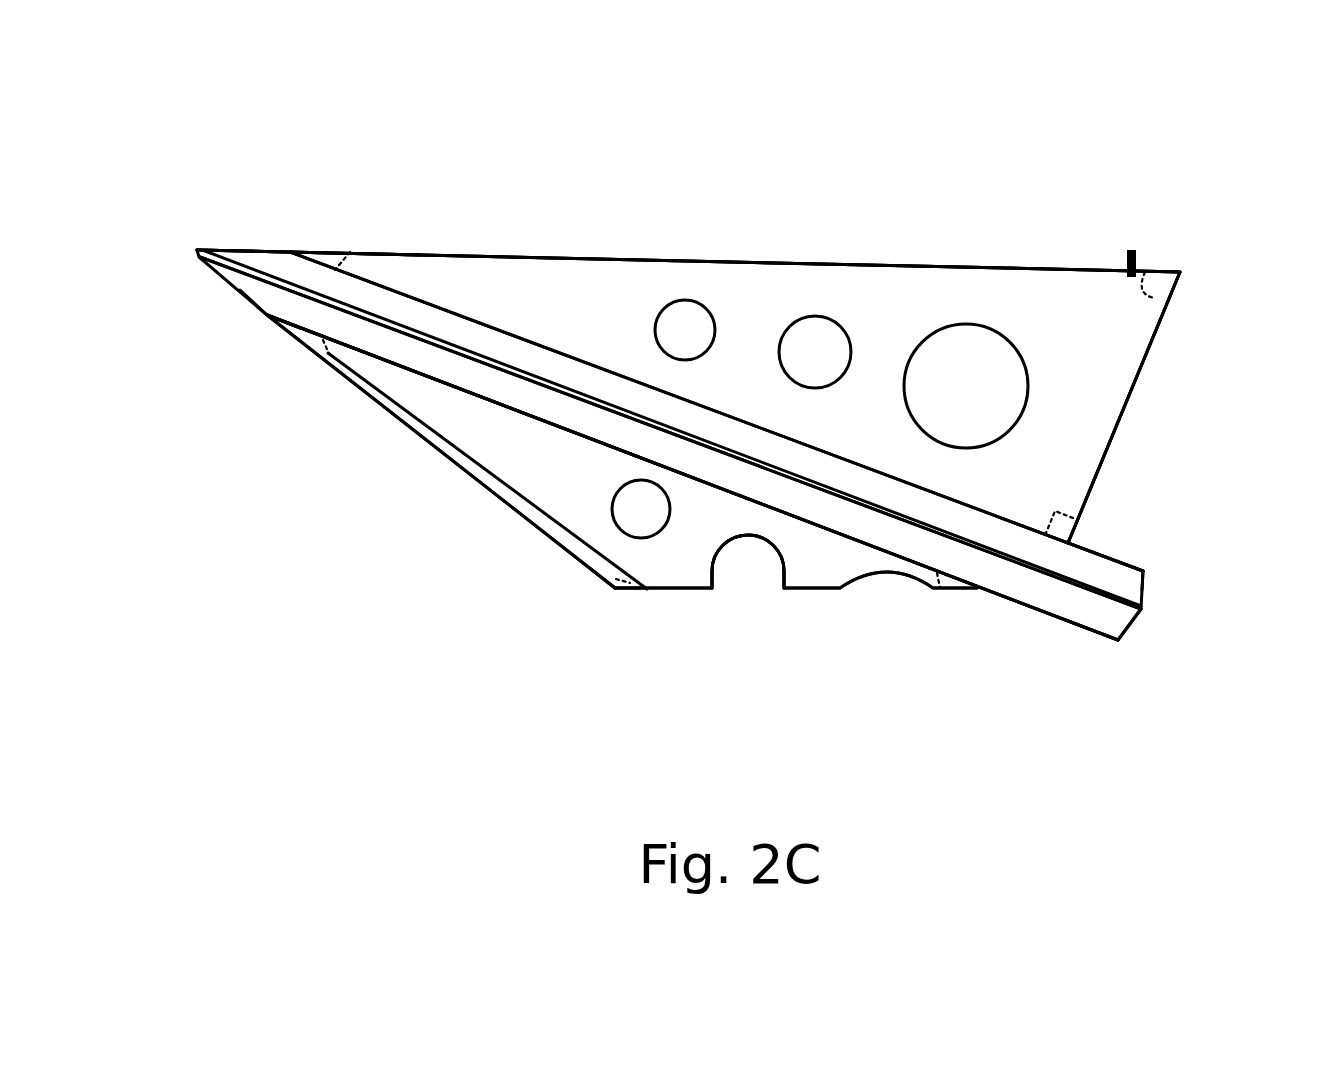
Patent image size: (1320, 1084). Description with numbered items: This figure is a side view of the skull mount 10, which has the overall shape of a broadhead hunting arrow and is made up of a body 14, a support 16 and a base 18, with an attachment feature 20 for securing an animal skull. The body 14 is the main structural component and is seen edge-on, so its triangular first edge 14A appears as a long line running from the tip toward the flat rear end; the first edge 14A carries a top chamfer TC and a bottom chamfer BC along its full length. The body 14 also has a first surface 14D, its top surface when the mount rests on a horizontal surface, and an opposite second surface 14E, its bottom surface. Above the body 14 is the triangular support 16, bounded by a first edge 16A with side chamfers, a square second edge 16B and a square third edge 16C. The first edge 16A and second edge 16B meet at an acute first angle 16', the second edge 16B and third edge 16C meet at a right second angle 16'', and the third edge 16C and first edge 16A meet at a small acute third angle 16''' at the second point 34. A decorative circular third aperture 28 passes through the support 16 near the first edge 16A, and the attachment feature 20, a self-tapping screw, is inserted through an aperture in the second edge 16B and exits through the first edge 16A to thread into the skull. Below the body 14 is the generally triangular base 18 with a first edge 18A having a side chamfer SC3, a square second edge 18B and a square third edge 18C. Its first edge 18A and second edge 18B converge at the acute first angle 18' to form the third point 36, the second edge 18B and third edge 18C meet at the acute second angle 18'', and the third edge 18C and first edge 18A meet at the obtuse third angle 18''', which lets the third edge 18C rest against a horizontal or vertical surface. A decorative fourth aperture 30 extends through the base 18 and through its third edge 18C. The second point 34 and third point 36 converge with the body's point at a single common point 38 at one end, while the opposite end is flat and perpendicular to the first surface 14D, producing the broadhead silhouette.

The skull mount 10 is at (851, 205).
The body 14 is at (1137, 627).
The first edge 14A is at (999, 565).
The first surface 14D is at (1110, 556).
The second surface 14E is at (1001, 604).
The support 16 is at (688, 349).
The first edge 16A is at (955, 262).
The second edge 16B is at (1128, 407).
The third edge 16C is at (549, 346).
The first angle 16' is at (1207, 306).
The second angle 16'' is at (1114, 482).
The third angle 16''' is at (373, 220).
The base 18 is at (622, 530).
The first edge 18A is at (552, 550).
The second edge 18B is at (438, 381).
The third edge 18C is at (696, 594).
The first angle 18' is at (328, 405).
The second angle 18'' is at (956, 632).
The third angle 18''' is at (580, 641).
The attachment feature 20 is at (1141, 245).
The third aperture 28 is at (788, 320).
The fourth aperture 30 is at (750, 568).
The second point 34 is at (267, 243).
The third point 36 is at (266, 319).
The common point 38 is at (187, 247).
The top chamfer TC is at (1127, 582).
The bottom chamfer BC is at (1109, 623).
The side chamfer SC3 is at (589, 564).